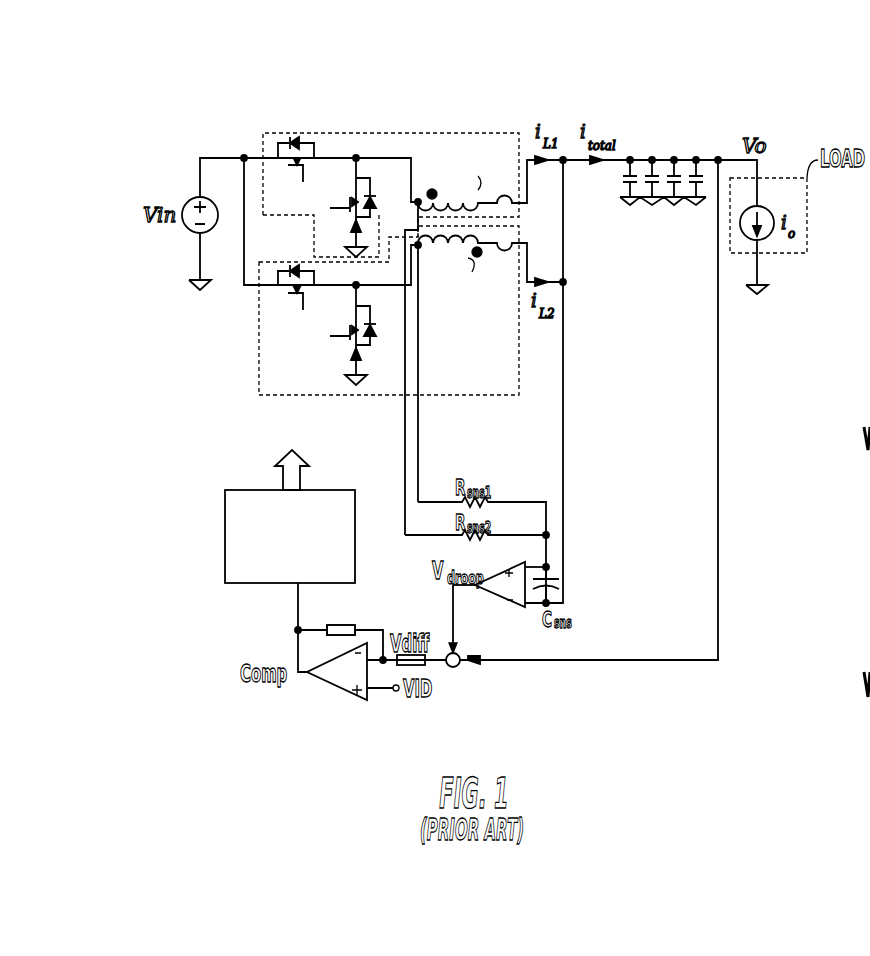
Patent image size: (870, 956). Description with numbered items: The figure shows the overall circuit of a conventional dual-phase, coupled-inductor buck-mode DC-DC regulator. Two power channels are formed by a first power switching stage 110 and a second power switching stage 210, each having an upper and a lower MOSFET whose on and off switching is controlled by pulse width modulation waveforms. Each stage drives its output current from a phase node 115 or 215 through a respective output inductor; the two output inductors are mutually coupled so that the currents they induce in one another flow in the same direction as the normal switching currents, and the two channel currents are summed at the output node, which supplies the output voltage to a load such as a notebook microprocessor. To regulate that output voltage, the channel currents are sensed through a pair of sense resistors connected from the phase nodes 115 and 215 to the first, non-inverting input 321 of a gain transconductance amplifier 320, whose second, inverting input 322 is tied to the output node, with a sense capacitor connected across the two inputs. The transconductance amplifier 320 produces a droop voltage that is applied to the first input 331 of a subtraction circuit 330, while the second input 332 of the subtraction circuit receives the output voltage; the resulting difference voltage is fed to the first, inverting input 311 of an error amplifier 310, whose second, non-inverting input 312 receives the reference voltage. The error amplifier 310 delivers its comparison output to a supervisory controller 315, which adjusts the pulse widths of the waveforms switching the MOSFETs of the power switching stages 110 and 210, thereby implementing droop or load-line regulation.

The power switching stage 110 is at (398, 133).
The phase node 115 is at (356, 157).
The power switching stage 210 is at (450, 395).
The phase node 215 is at (358, 284).
The error amplifier 310 is at (345, 693).
The first, inverting input of error amplifier 311 is at (370, 652).
The second, non-inverting input of error amplifier 312 is at (373, 694).
The supervisory controller 315 is at (342, 489).
The transconductance amplifier 320 is at (497, 591).
The first, non-inverting input of transconductance amplifier 321 is at (533, 567).
The second, inverting input of transconductance amplifier 322 is at (529, 607).
The subtraction circuit 330 is at (453, 668).
The first input of subtraction circuit 331 is at (447, 649).
The second input of subtraction circuit 332 is at (461, 665).